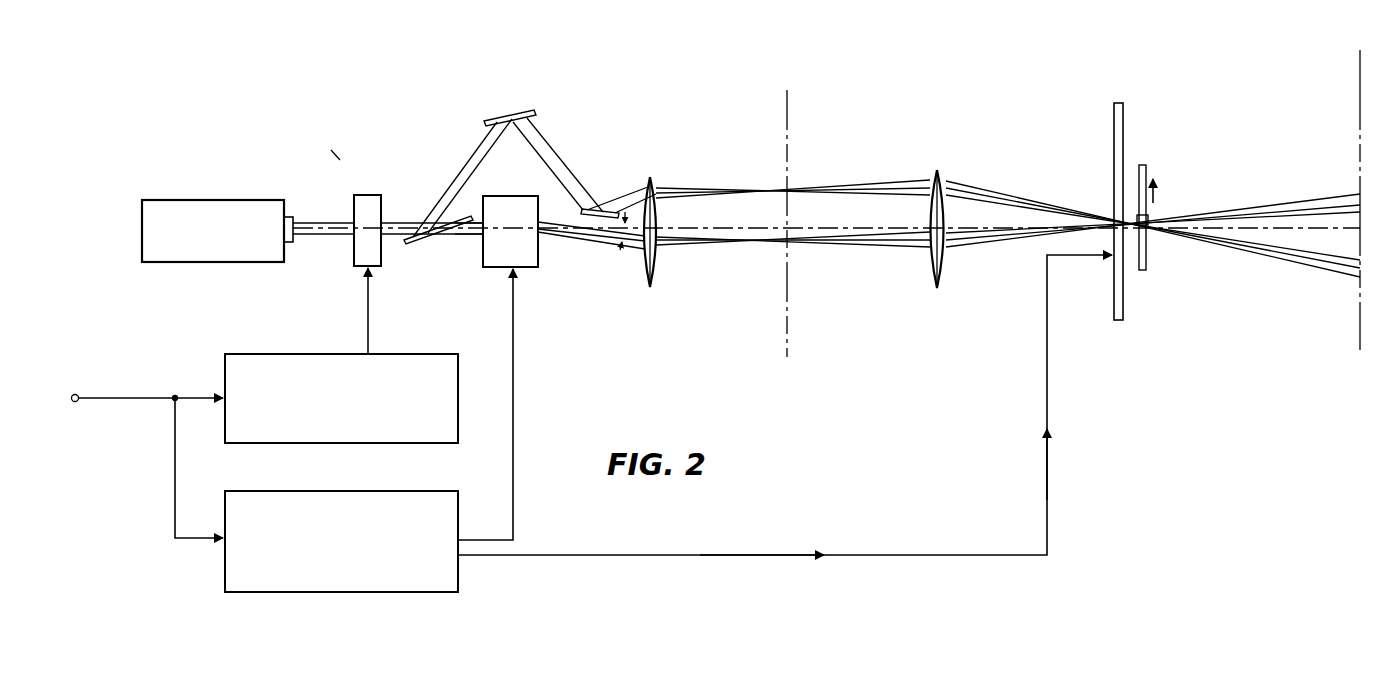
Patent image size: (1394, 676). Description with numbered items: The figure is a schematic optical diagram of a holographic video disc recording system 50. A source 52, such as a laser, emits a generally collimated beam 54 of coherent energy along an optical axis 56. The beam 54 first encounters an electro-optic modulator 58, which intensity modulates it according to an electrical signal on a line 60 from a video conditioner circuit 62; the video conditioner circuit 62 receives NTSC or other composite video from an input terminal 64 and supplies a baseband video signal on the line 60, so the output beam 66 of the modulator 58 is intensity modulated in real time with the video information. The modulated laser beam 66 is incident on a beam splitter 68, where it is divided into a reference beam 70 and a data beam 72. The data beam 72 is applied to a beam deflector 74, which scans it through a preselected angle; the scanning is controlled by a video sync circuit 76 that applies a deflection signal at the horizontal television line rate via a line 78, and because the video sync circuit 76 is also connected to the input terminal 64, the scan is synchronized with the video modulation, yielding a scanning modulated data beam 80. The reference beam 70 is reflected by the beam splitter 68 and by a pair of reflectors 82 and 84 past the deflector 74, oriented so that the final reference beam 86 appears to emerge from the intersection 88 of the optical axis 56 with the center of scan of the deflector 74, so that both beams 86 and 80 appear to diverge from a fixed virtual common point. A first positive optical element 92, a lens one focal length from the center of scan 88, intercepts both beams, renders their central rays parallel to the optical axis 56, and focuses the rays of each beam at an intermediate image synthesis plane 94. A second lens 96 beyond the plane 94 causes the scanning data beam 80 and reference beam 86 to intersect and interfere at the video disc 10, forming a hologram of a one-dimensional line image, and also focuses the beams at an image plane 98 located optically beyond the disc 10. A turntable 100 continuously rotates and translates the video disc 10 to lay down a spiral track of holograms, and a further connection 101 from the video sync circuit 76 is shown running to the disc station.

The video disc 10 is at (1116, 303).
The holographic video disc recording system 50 is at (722, 96).
The laser source 52 is at (228, 200).
The collimated beam of coherent energy 54 is at (321, 222).
The optical axis 56 is at (758, 228).
The electro-optic modulator 58 is at (368, 195).
The line 60 is at (368, 312).
The video conditioner circuit 62 is at (258, 353).
The input terminal 64 is at (75, 394).
The modulated laser beam 66 is at (395, 240).
The beam splitter 68 is at (418, 242).
The reference beam 70 is at (441, 197).
The data beam 72 is at (470, 236).
The beam deflector 74 is at (585, 293).
The video sync circuit 76 is at (458, 575).
The line 78 is at (513, 432).
The scanning modulated data beam 80 is at (631, 257).
The reflector 82 is at (517, 110).
The reflector 84 is at (580, 212).
The final reference beam 86 is at (620, 187).
The intersection 88 is at (543, 229).
The first positive optical element 92 is at (658, 268).
The intermediate image synthesis plane 94 is at (790, 124).
The second positive optical element 96 is at (946, 262).
The image plane 98 is at (1358, 319).
The turntable 100 is at (1148, 258).
The sync signal line 101 is at (1023, 556).